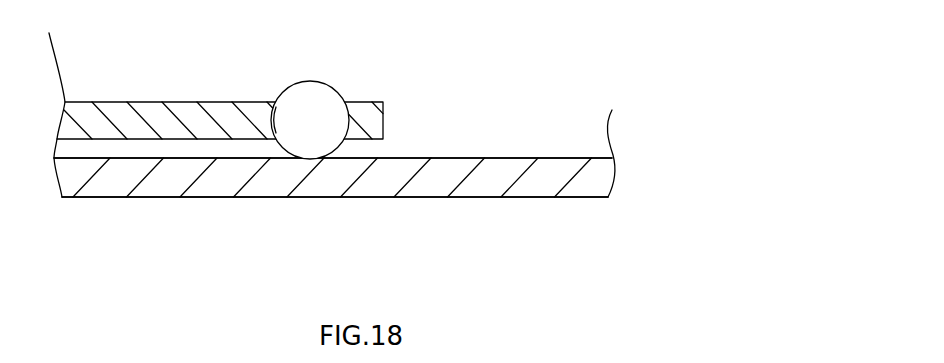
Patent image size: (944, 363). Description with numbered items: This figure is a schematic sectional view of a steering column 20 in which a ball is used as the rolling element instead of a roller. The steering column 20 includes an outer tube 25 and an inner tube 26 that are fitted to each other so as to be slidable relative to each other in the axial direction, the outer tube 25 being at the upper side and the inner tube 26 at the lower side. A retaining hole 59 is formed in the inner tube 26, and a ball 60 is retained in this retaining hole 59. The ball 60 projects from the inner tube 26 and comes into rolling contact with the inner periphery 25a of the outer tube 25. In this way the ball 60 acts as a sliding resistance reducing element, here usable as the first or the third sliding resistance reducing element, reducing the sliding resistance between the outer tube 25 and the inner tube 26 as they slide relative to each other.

The steering column 20 is at (340, 228).
The outer tube 25 is at (490, 211).
The inner periphery of the outer tube 25a is at (510, 158).
The inner tube 26 is at (150, 87).
The retaining hole 59 is at (274, 111).
The ball 60 is at (320, 108).